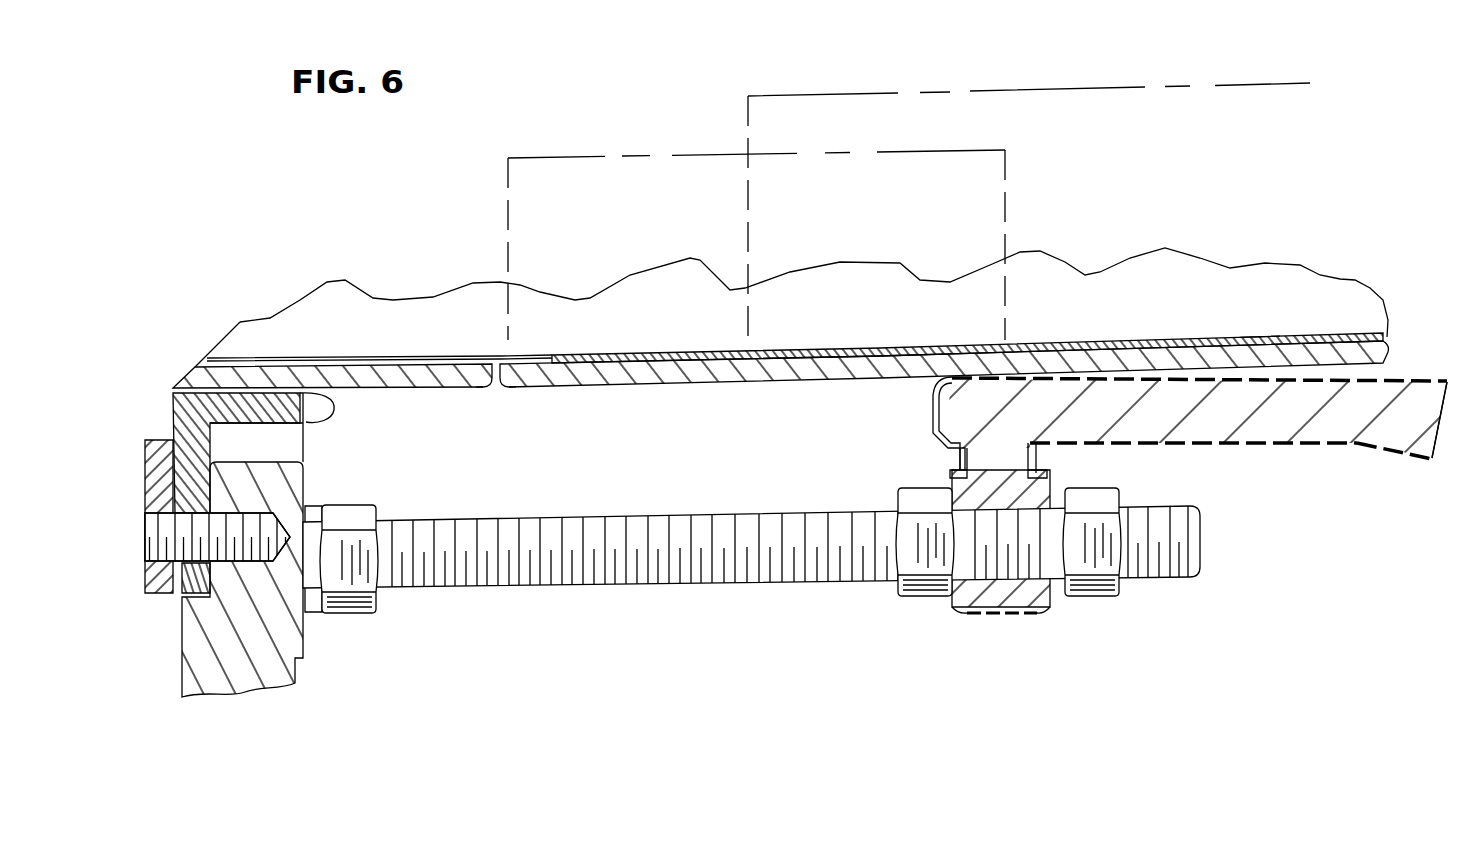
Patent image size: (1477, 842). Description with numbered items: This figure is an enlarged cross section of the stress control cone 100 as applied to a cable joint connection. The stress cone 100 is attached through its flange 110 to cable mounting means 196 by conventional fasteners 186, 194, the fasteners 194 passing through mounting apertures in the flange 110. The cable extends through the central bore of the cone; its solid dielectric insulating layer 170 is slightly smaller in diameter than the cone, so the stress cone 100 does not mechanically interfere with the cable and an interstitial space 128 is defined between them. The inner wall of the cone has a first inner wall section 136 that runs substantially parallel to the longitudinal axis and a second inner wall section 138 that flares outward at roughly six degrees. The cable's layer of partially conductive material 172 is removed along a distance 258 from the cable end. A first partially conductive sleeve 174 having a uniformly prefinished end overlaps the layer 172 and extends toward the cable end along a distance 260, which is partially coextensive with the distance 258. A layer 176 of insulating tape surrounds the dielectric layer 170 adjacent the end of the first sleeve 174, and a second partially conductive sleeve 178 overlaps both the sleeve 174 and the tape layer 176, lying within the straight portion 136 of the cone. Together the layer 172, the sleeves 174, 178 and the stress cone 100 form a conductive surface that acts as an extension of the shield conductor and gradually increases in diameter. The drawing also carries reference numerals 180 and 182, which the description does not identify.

The stress control cone 100 is at (1343, 415).
The flange 110 is at (993, 618).
The interstitial space 128 is at (935, 378).
The first inner wall section 136 is at (1177, 403).
The second inner wall section 138 is at (1412, 462).
The solid dielectric insulating layer 170 is at (1228, 287).
The layer of partially conductive material 172 is at (235, 357).
The first partially conductive sleeve 174 is at (752, 347).
The layer of insulating tape 176 is at (1092, 340).
The second partially conductive sleeve 178 is at (554, 357).
The top surface 180 is at (1258, 337).
The gap 182 is at (555, 388).
The fasteners 186 is at (930, 600).
The fasteners 194 is at (578, 590).
The cable mounting means 196 is at (300, 645).
The distance 258 is at (893, 92).
The distance 260 is at (699, 156).